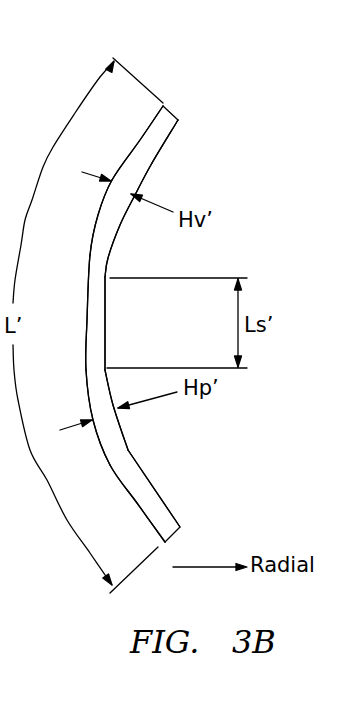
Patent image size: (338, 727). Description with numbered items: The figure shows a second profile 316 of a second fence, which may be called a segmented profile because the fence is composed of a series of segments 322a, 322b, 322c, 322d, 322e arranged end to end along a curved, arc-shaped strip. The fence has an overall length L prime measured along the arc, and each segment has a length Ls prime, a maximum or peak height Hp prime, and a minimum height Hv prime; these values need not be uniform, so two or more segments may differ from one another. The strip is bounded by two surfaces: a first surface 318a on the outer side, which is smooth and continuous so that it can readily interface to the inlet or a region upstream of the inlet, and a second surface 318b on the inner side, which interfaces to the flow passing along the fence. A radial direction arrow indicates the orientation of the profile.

The second profile 316 is at (202, 294).
The first surface 318a is at (134, 157).
The second surface 318b is at (138, 190).
The segment 322a is at (153, 164).
The segment 322b is at (115, 237).
The segment 322c is at (105, 322).
The segment 322d is at (125, 435).
The segment 322e is at (163, 498).